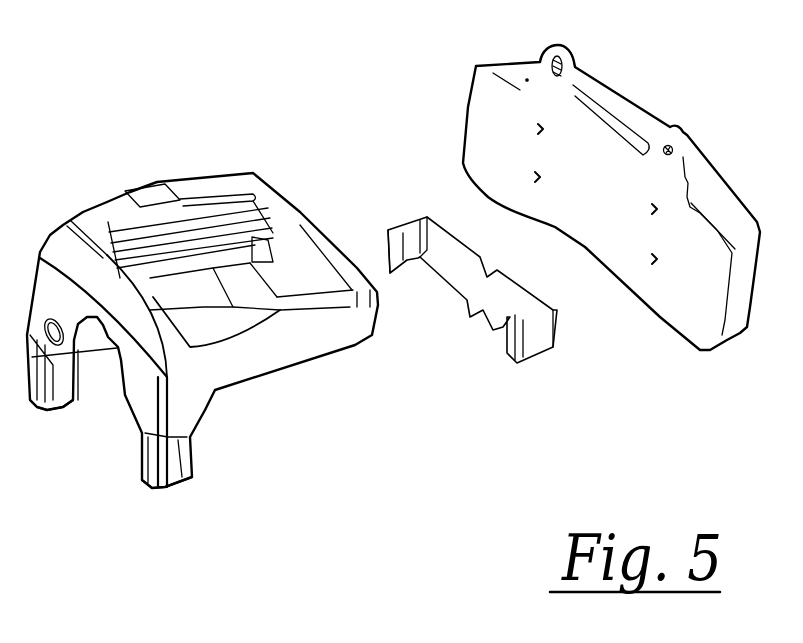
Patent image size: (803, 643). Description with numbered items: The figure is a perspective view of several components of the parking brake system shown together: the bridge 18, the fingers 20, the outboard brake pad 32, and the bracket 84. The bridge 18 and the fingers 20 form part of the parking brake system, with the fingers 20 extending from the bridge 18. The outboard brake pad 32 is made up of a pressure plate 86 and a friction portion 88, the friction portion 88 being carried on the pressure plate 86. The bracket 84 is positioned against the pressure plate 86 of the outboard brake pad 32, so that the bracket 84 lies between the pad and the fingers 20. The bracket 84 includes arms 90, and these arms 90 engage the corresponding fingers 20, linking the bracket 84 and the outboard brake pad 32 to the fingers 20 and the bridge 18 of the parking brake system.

The bridge 18 is at (192, 193).
The fingers 20 is at (53, 407).
The outboard brake pad 32 is at (527, 62).
The bracket 84 is at (468, 275).
The pressure plate 86 is at (482, 115).
The friction portion 88 is at (613, 100).
The arms 90 is at (410, 230).